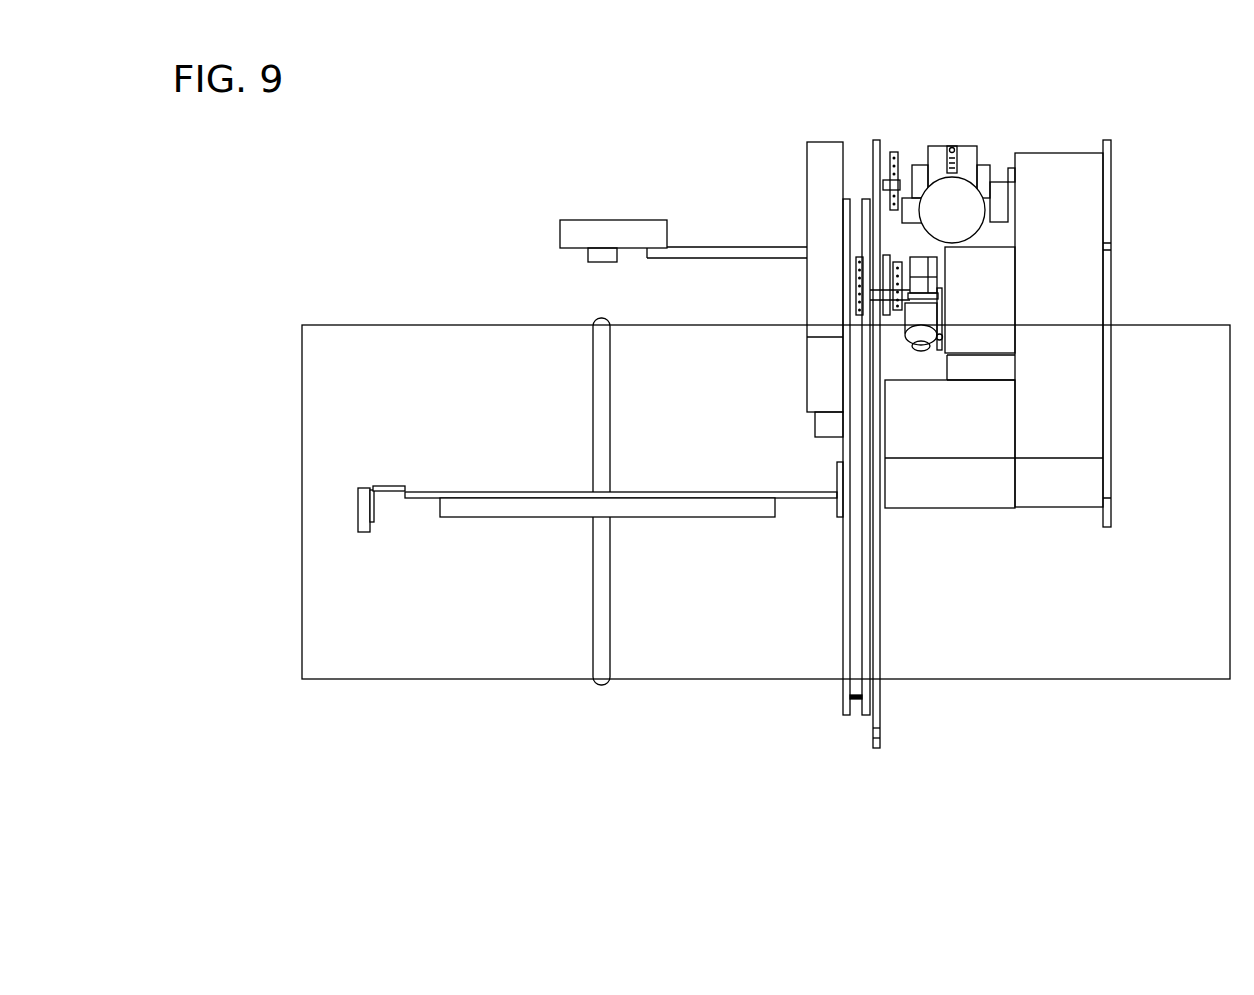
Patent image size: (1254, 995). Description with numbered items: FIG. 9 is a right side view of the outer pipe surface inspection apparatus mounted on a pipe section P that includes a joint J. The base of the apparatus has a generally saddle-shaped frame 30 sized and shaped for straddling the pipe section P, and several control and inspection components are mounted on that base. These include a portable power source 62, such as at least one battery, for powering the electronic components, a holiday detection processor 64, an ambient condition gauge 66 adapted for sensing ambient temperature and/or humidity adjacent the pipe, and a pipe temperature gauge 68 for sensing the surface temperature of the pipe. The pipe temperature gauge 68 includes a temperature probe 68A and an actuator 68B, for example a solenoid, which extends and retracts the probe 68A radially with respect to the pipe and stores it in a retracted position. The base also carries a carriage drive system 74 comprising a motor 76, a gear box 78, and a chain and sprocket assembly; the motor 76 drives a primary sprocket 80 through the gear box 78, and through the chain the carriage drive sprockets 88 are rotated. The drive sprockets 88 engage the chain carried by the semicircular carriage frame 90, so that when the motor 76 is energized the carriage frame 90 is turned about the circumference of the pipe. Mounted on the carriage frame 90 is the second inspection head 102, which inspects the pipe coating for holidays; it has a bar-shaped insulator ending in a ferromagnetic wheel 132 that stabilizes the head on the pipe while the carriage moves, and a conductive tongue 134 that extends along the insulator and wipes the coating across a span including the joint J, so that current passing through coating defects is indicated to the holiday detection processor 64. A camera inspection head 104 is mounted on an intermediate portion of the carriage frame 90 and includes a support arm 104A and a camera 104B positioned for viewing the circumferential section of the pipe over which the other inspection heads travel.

The saddle-shaped frame 30 is at (1038, 320).
The portable power source 62 is at (998, 508).
The holiday detection processor 64 is at (1103, 218).
The ambient condition gauge 66 is at (1017, 335).
The pipe temperature gauge 68 is at (987, 429).
The temperature probe 68A is at (933, 355).
The actuator 68B is at (910, 353).
The carriage drive system 74 is at (961, 139).
The motor 76 is at (945, 185).
The gear box 78 is at (957, 146).
The primary sprocket 80 is at (895, 152).
The carriage drive sprocket 88 is at (855, 287).
The carriage frame 90 is at (838, 715).
The second inspection head 102 is at (722, 492).
The camera inspection head 104 is at (662, 160).
The support arm 104A is at (720, 247).
The camera 104B is at (587, 220).
The ferromagnetic wheel 132 is at (357, 515).
The conductive tongue 134 is at (672, 517).
The pipe section P is at (410, 325).
The pipe joint J is at (592, 625).